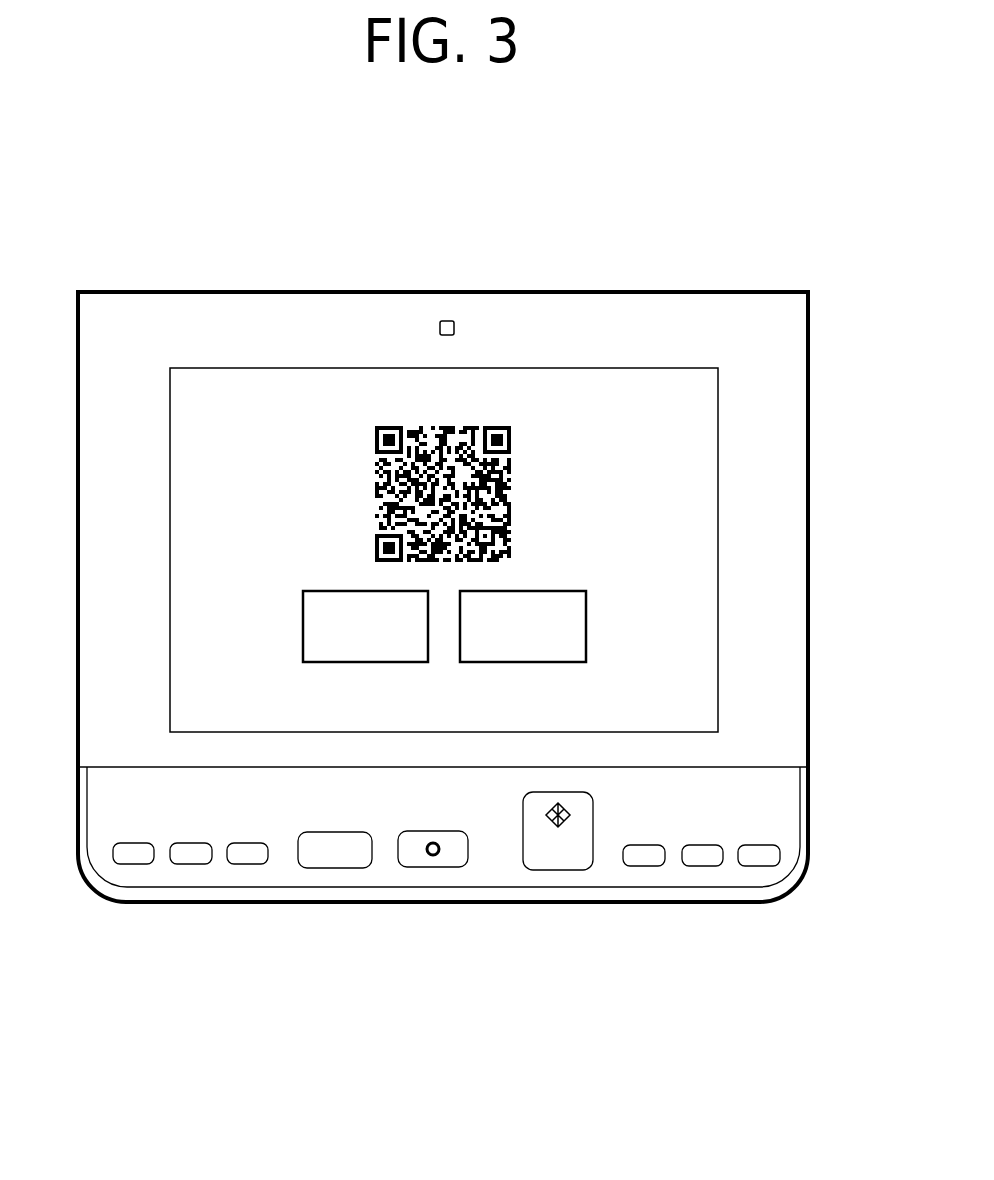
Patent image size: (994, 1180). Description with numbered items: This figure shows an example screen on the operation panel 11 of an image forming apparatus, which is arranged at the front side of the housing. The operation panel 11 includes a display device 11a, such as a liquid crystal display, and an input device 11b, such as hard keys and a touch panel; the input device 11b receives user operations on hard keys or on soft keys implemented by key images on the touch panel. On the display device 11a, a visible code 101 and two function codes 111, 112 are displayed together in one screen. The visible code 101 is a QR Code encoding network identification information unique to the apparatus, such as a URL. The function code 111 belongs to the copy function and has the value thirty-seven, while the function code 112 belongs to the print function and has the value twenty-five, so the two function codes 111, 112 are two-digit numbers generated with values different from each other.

The operation panel 11 is at (795, 292).
The display device 11a is at (665, 415).
The input device 11b is at (500, 868).
The visible code 101 is at (384, 410).
The function code 111 is at (308, 580).
The function code 112 is at (551, 577).